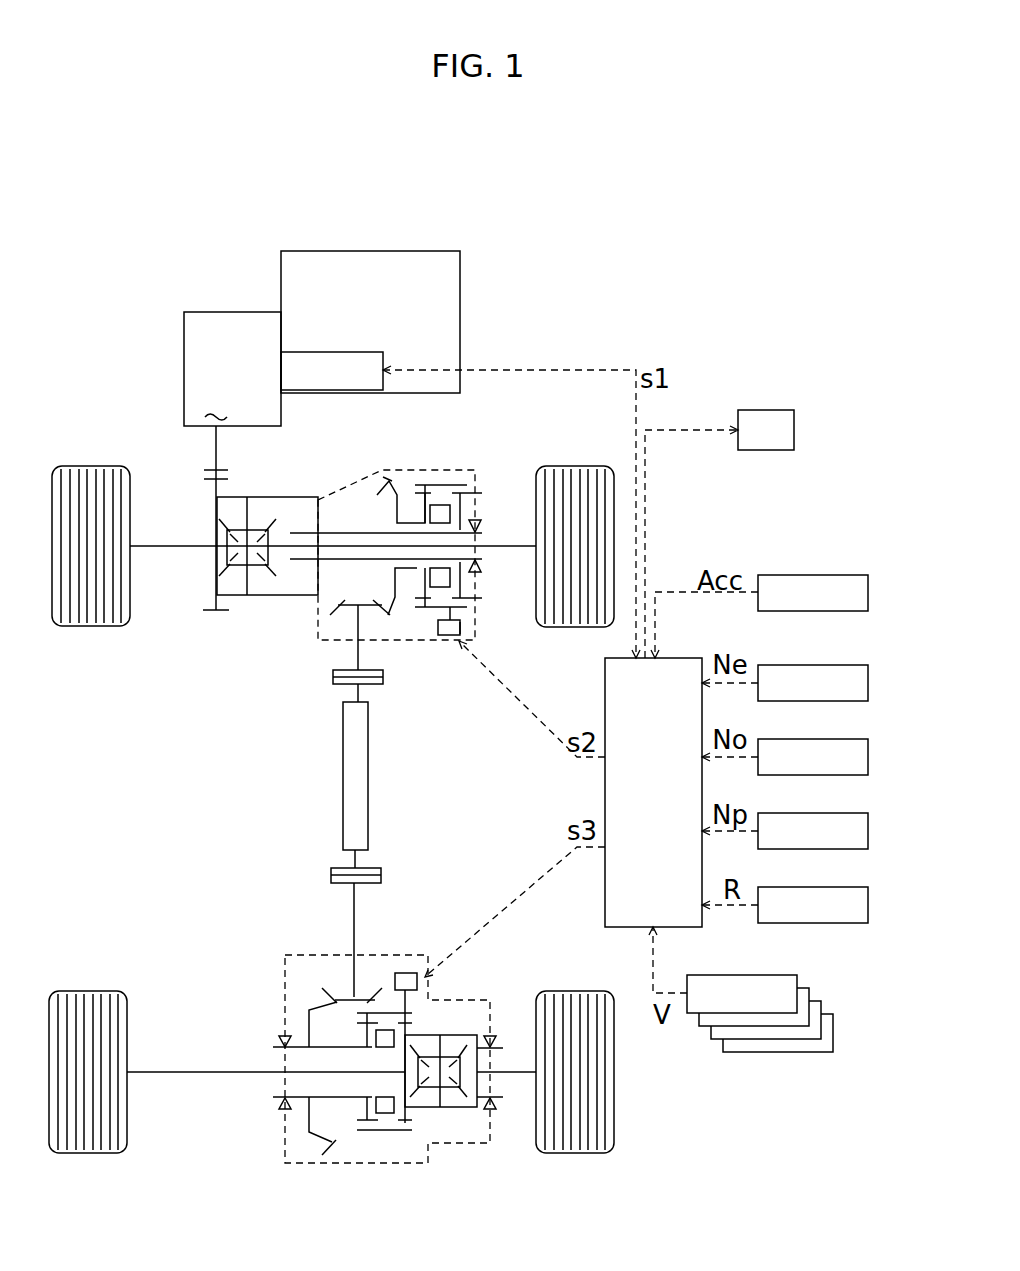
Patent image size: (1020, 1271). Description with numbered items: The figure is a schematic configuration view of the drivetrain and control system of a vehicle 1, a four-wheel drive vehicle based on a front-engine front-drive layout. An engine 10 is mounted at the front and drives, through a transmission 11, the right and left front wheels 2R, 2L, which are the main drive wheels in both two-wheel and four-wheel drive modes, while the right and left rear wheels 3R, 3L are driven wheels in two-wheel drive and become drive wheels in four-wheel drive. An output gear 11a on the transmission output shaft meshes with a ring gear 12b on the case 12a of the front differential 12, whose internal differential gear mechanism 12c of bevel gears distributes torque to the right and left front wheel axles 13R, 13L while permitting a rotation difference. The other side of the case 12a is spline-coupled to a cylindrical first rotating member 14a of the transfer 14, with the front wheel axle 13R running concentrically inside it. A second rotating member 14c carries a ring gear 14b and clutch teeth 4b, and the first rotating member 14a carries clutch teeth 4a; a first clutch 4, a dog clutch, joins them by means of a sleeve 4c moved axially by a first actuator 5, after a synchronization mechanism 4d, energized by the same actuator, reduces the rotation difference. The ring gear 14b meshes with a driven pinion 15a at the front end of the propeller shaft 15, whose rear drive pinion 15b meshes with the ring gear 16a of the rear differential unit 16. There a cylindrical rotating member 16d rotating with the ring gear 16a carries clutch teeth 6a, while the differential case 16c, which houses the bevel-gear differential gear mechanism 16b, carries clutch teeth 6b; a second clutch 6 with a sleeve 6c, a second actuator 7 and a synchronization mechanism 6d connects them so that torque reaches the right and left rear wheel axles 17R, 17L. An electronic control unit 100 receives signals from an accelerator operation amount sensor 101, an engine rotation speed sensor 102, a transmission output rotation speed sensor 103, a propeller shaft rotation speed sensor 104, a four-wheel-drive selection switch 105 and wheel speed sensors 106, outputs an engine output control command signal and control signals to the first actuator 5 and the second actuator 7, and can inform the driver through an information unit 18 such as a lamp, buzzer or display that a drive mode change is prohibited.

The vehicle 1 is at (556, 258).
The engine 10 is at (405, 251).
The transmission 11 is at (212, 312).
The output gear 11a is at (206, 469).
The front differential 12 is at (289, 494).
The case 12a is at (265, 496).
The ring gear 12b is at (208, 482).
The differential gear mechanism 12c is at (258, 575).
The left front wheel axle 13L is at (160, 548).
The right front wheel axle 13R is at (508, 548).
The left front wheel 2L is at (92, 465).
The right front wheel 2R is at (568, 465).
The left rear wheel 3L is at (84, 1155).
The right rear wheel 3R is at (560, 1155).
The transfer 14 is at (479, 466).
The first rotating member 14a is at (347, 532).
The ring gear 14b is at (395, 479).
The second rotating member 14c is at (395, 570).
The first clutch 4 is at (453, 478).
The clutch teeth 4a is at (485, 508).
The clutch teeth 4b is at (413, 482).
The sleeve 4c is at (420, 610).
The synchronization mechanism 4d is at (449, 636).
The first actuator 5 is at (481, 630).
The propeller shaft 15 is at (370, 778).
The driven pinion 15a is at (333, 645).
The drive pinion 15b is at (352, 975).
The rear differential unit 16 is at (282, 980).
The ring gear 16a is at (285, 1030).
The differential gear mechanism 16b is at (450, 1090).
The differential case 16c is at (474, 1000).
The rotating member 16d is at (297, 1085).
The second clutch 6 is at (367, 1137).
The clutch teeth 6a is at (362, 1037).
The clutch teeth 6b is at (410, 1028).
The sleeve 6c is at (387, 1013).
The synchronization mechanism 6d is at (383, 1115).
The second actuator 7 is at (400, 973).
The left rear wheel axle 17L is at (165, 1074).
The right rear wheel axle 17R is at (515, 1075).
The information unit 18 is at (764, 411).
The electronic control unit 100 is at (700, 927).
The accelerator operation amount sensor 101 is at (830, 575).
The engine rotation speed sensor 102 is at (830, 665).
The transmission output rotation speed sensor 103 is at (830, 739).
The propeller shaft rotation speed sensor 104 is at (830, 813).
The 4WD selection switch 105 is at (830, 887).
The wheel speed sensors 106 is at (826, 1013).